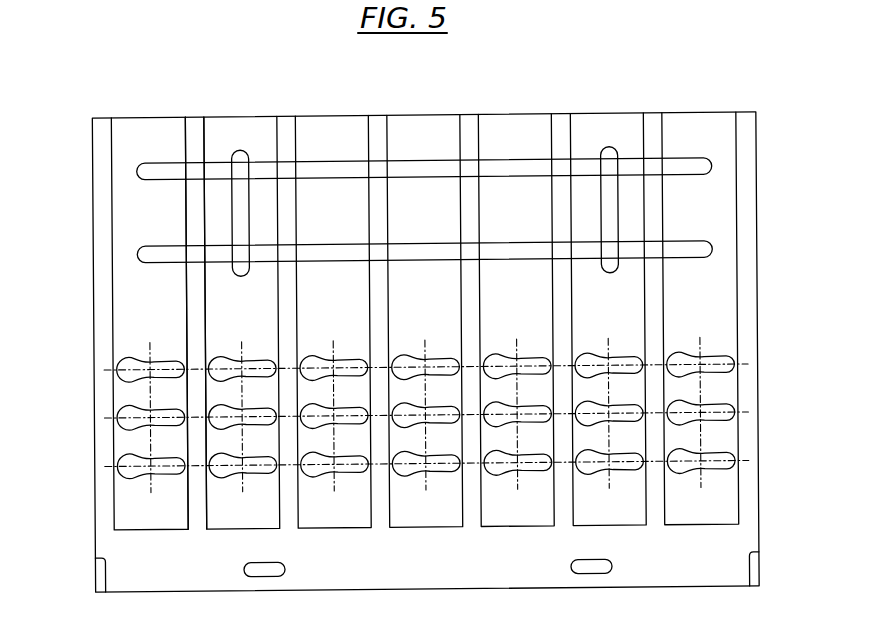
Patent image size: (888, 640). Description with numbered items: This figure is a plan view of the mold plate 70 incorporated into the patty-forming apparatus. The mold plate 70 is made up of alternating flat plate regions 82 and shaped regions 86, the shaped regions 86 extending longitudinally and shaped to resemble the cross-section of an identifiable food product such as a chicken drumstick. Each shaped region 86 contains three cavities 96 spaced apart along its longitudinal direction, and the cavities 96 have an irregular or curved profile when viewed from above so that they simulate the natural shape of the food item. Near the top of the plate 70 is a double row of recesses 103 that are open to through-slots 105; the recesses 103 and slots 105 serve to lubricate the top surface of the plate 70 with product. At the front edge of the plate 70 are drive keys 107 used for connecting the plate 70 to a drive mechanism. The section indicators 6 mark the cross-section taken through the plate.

The mold plate 70 is at (760, 409).
The flat plate region 82 is at (198, 522).
The shaped region 86 is at (132, 522).
The cavity 96 is at (120, 374).
The recess 103 is at (327, 164).
The through-slot 105 is at (235, 211).
The drive key 107 is at (252, 570).
The section line 6- 6 is at (381, 462).